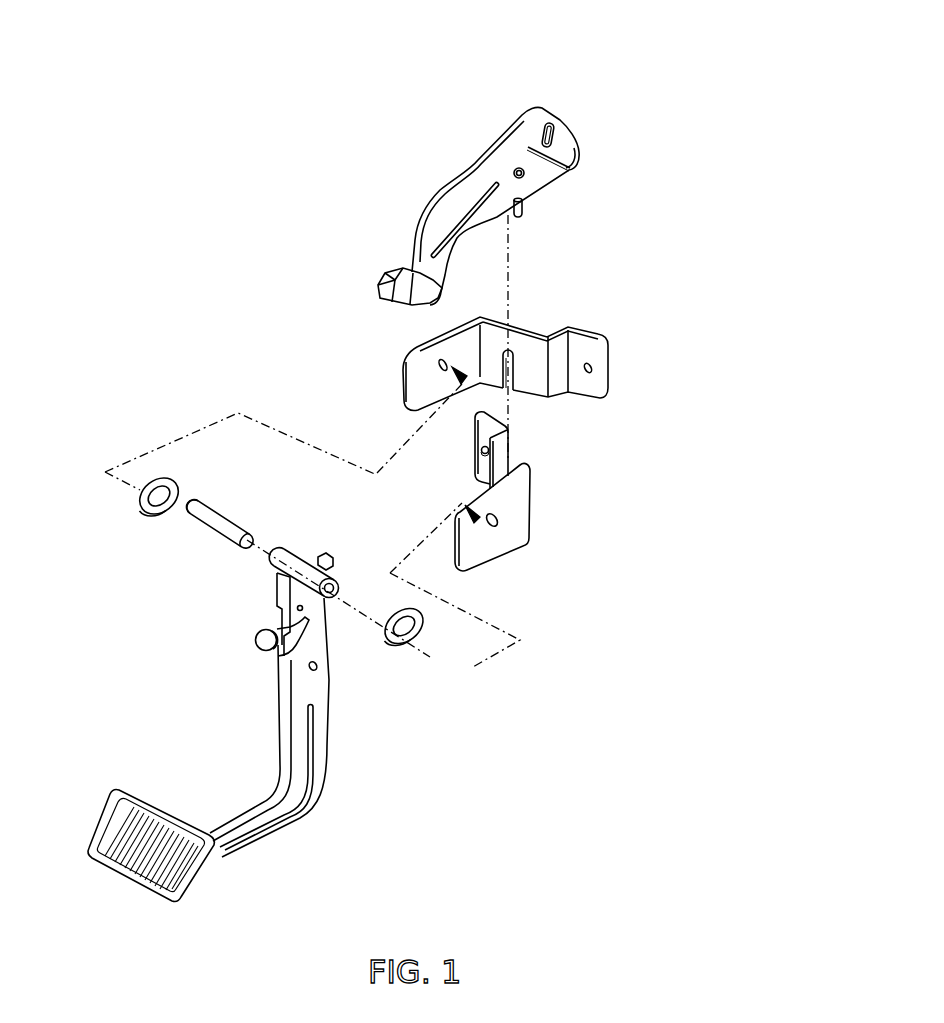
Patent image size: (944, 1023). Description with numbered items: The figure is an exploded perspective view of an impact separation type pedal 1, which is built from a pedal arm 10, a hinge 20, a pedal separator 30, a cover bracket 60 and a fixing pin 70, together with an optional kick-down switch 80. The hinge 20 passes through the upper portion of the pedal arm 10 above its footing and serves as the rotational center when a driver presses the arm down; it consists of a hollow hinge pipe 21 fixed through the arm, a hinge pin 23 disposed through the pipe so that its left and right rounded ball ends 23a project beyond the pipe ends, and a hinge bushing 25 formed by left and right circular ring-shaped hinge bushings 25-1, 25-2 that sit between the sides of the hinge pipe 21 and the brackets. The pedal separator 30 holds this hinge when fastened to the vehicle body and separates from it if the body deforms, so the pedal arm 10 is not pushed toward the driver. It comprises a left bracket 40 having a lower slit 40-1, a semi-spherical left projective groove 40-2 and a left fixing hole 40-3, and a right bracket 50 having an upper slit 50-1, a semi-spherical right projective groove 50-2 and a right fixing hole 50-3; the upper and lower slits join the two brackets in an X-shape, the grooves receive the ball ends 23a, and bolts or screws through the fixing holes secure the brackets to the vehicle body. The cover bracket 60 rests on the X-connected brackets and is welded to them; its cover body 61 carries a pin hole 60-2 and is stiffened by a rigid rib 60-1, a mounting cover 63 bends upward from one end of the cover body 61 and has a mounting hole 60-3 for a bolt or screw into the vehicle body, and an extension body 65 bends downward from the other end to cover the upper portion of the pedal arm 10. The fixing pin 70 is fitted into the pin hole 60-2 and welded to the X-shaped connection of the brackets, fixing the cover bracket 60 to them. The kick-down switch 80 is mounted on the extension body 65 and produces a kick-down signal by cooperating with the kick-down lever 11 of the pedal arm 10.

The pedal 1 is at (210, 216).
The pedal arm 10 is at (318, 763).
The kick-down lever 11 is at (263, 640).
The hinge 20 is at (103, 577).
The hinge pipe 21 is at (276, 573).
The hinge pin 23 is at (250, 543).
The ball ends 23a is at (194, 519).
The hinge bushing 25 is at (212, 343).
The left hinge bushing 25-1 is at (153, 475).
The right hinge bushing 25-2 is at (394, 614).
The pedal separator 30 is at (725, 393).
The left bracket 40 is at (521, 339).
The lower slit 40-1 is at (515, 367).
The left projective groove 40-2 is at (437, 370).
The left fixing hole 40-3 is at (587, 370).
The right bracket 50 is at (523, 497).
The upper slit 50-1 is at (513, 461).
The right projective groove 50-2 is at (494, 526).
The right fixing hole 50-3 is at (486, 450).
The cover bracket 60 is at (457, 45).
The rigid rib 60-1 is at (457, 227).
The pin hole 60-2 is at (524, 165).
The mounting hole 60-3 is at (548, 133).
The cover body 61 is at (458, 190).
The mounting cover 63 is at (533, 130).
The extension body 65 is at (423, 268).
The fixing pin 70 is at (523, 210).
The kick-down switch 80 is at (397, 268).